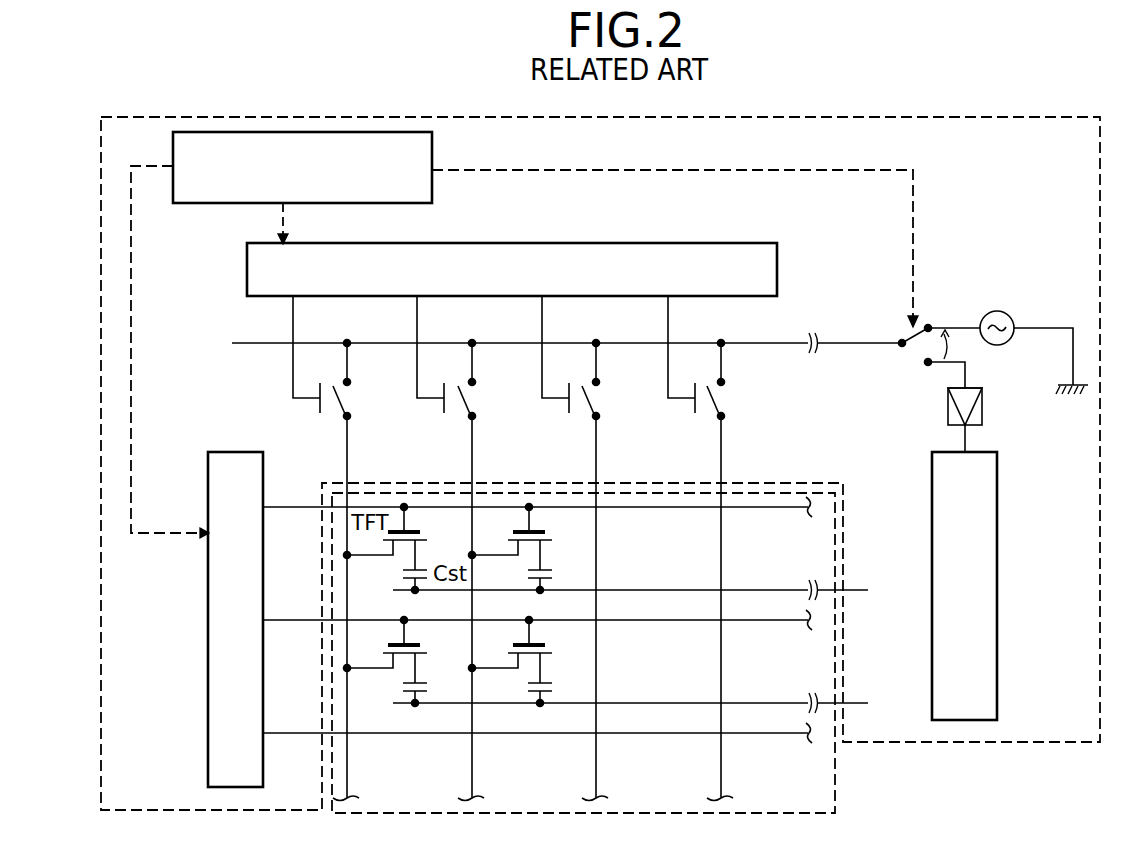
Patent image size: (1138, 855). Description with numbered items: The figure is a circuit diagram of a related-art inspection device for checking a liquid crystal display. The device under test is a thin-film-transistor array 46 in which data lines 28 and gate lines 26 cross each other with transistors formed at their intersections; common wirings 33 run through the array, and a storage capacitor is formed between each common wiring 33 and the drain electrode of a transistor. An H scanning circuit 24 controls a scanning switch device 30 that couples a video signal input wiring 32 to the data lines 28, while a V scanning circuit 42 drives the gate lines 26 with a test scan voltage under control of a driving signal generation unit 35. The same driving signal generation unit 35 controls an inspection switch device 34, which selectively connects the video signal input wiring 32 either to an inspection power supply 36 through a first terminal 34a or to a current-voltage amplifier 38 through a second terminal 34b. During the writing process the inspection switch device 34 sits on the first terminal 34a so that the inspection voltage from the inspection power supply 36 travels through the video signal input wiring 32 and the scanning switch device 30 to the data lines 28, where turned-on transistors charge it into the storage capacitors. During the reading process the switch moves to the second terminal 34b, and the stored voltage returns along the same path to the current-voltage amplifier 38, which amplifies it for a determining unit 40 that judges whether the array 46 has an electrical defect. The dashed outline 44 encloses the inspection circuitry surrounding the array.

The H scanning circuit 24 is at (692, 243).
The gate lines 26 is at (295, 507).
The data lines 28 is at (347, 450).
The scanning switch device 30 is at (350, 394).
The video signal input wiring 32 is at (692, 342).
The common wirings 33 is at (757, 590).
The inspection switch device 34 is at (907, 348).
The first terminal 34a is at (930, 325).
The second terminal 34b is at (928, 366).
The driving signal generation unit 35 is at (432, 151).
The inspection power supply 36 is at (997, 311).
The current-voltage amplifier 38 is at (982, 405).
The determining unit 40 is at (997, 547).
The V scanning circuit 42 is at (208, 745).
The inspection circuit region 44 is at (975, 742).
The TFT array 46 is at (835, 768).